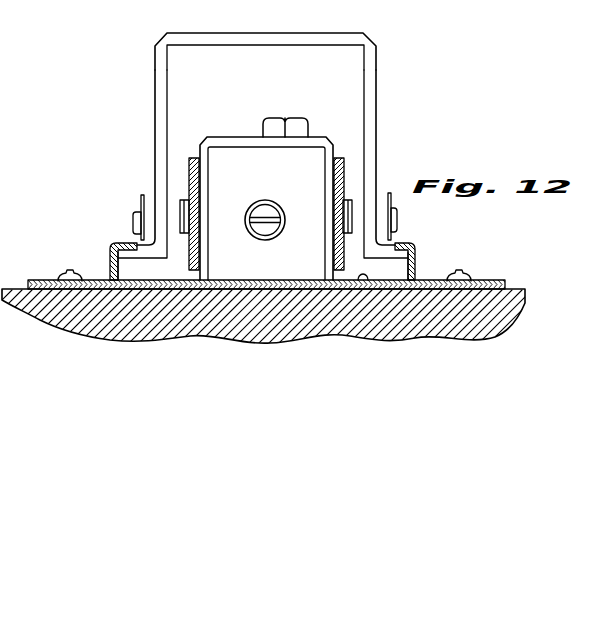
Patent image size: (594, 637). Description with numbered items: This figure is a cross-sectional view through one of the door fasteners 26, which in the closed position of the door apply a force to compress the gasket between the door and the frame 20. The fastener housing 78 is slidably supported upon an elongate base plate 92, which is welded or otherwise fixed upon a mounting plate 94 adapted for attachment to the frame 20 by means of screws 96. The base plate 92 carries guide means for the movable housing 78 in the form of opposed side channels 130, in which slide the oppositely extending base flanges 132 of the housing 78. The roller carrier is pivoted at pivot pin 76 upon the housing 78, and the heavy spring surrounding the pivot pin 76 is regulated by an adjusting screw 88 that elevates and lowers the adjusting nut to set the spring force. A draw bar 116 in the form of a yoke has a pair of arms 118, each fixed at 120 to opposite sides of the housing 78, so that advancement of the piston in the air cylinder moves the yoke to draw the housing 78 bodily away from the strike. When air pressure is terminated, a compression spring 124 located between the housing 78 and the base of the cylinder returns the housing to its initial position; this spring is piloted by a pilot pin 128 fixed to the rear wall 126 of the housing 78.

The frame 20 is at (500, 322).
The mounting plate 94 is at (492, 282).
The screws 96 is at (68, 279).
The base plate 92 is at (363, 280).
The housing 78 is at (158, 43).
The door fasteners 26 is at (378, 60).
The side channels 130 is at (115, 251).
The base flanges 132 is at (125, 268).
The pivot pin 76 is at (133, 220).
The fixing points of yoke arms 120 is at (181, 203).
The arms 118 is at (200, 166).
The draw bar 116 is at (190, 188).
The rear wall 126 is at (335, 176).
The adjusting screw 88 is at (293, 120).
The compression spring 124 is at (249, 208).
The pilot pin 128 is at (280, 212).